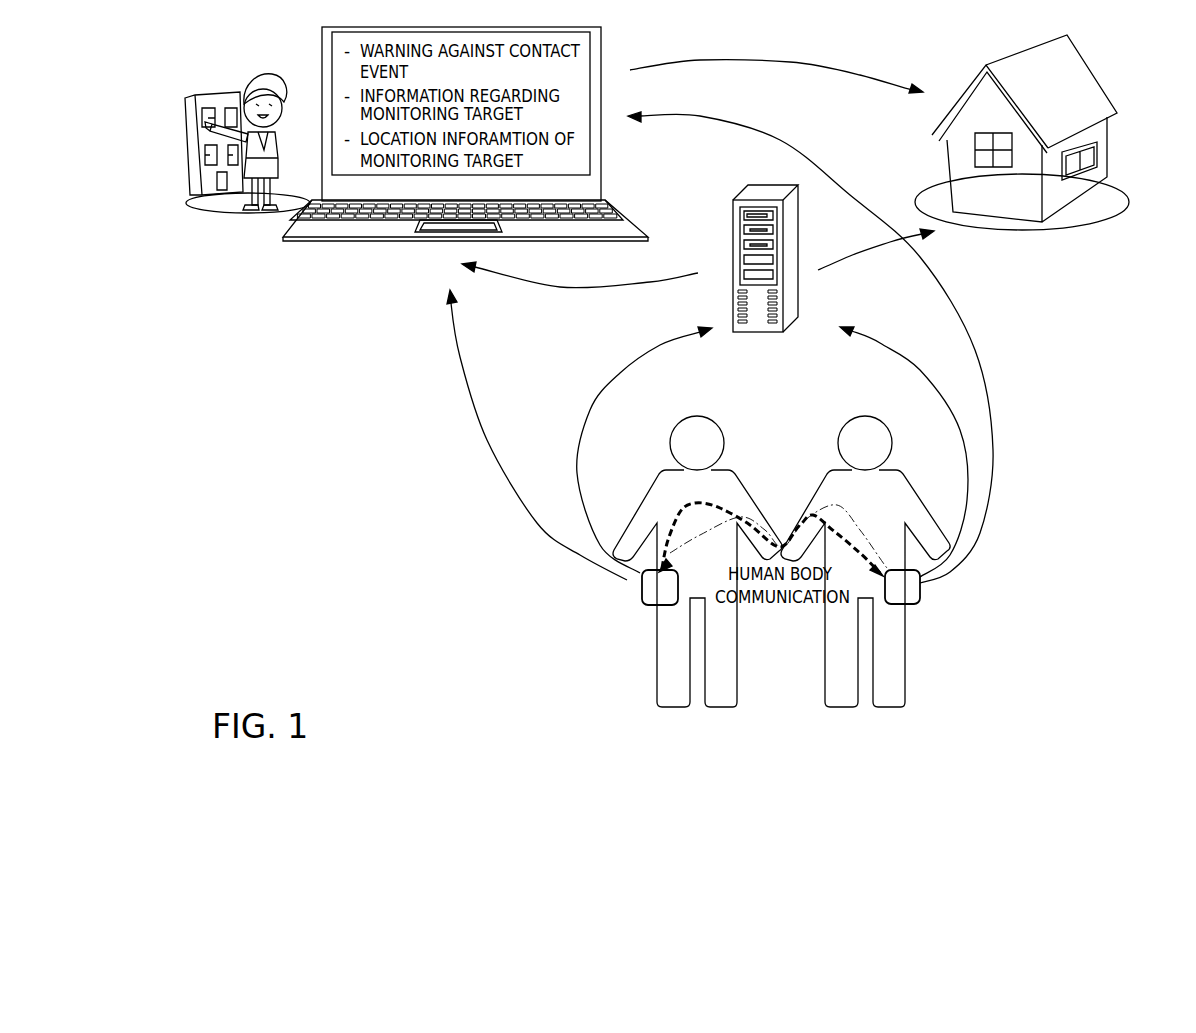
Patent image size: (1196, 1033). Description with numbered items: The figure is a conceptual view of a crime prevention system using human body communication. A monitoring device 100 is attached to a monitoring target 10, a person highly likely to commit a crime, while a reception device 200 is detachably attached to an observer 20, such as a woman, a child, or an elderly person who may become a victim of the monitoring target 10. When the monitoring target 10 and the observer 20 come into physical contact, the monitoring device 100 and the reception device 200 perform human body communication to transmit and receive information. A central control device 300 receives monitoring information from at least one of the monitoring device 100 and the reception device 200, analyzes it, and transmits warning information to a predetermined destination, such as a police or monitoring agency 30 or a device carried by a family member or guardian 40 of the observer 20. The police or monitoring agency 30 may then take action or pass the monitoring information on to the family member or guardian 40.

The monitoring target 10 is at (672, 693).
The observer 20 is at (897, 693).
The police or monitoring agency 30 is at (189, 203).
The family member or guardian 40 is at (1110, 208).
The monitoring device 100 is at (642, 590).
The reception device 200 is at (917, 593).
The central control device 300 is at (795, 285).